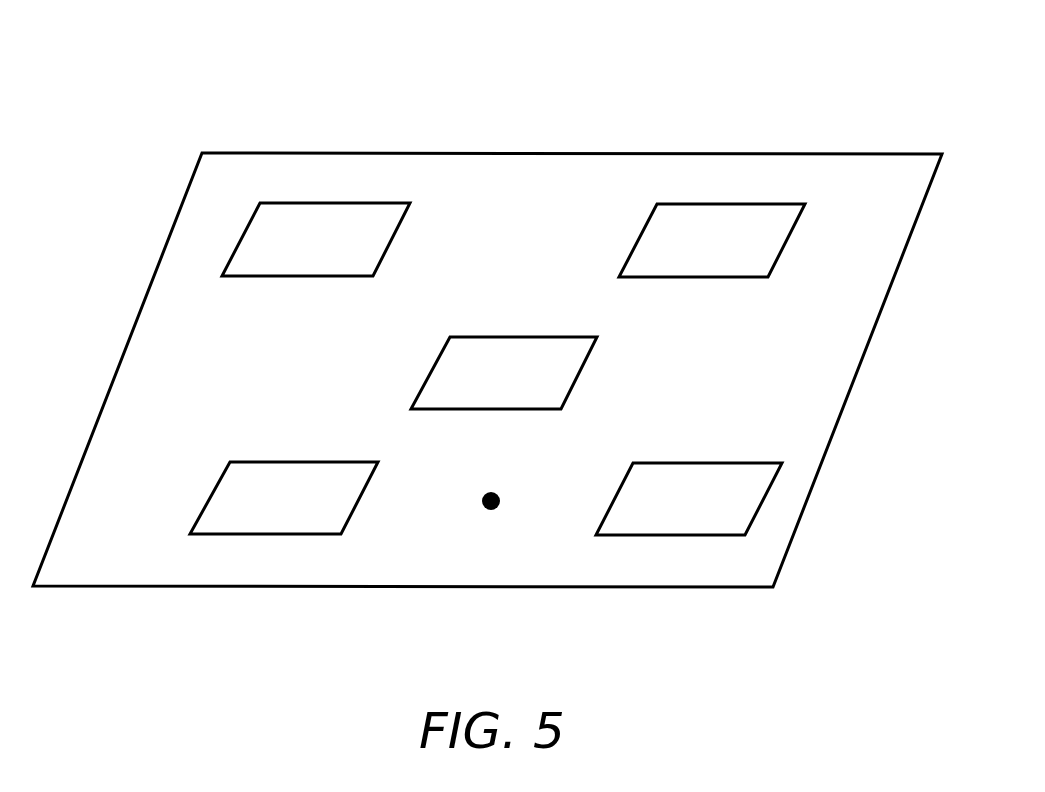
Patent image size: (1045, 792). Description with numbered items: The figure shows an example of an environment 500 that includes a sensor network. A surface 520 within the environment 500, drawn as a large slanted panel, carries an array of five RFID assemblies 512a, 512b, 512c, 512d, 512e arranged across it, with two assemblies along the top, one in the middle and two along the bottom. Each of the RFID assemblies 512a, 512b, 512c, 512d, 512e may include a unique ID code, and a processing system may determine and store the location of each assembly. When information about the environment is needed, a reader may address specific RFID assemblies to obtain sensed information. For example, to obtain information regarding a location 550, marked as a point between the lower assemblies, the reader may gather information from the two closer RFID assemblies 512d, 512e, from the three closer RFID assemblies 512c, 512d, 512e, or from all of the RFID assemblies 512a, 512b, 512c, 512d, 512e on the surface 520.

The environment 500 is at (388, 50).
The surface 520 is at (736, 153).
The RFID assembly 512a is at (288, 254).
The RFID assembly 512b is at (685, 254).
The RFID assembly 512c is at (535, 386).
The RFID assembly 512d is at (315, 511).
The RFID assembly 512e is at (719, 512).
The location 550 is at (496, 496).